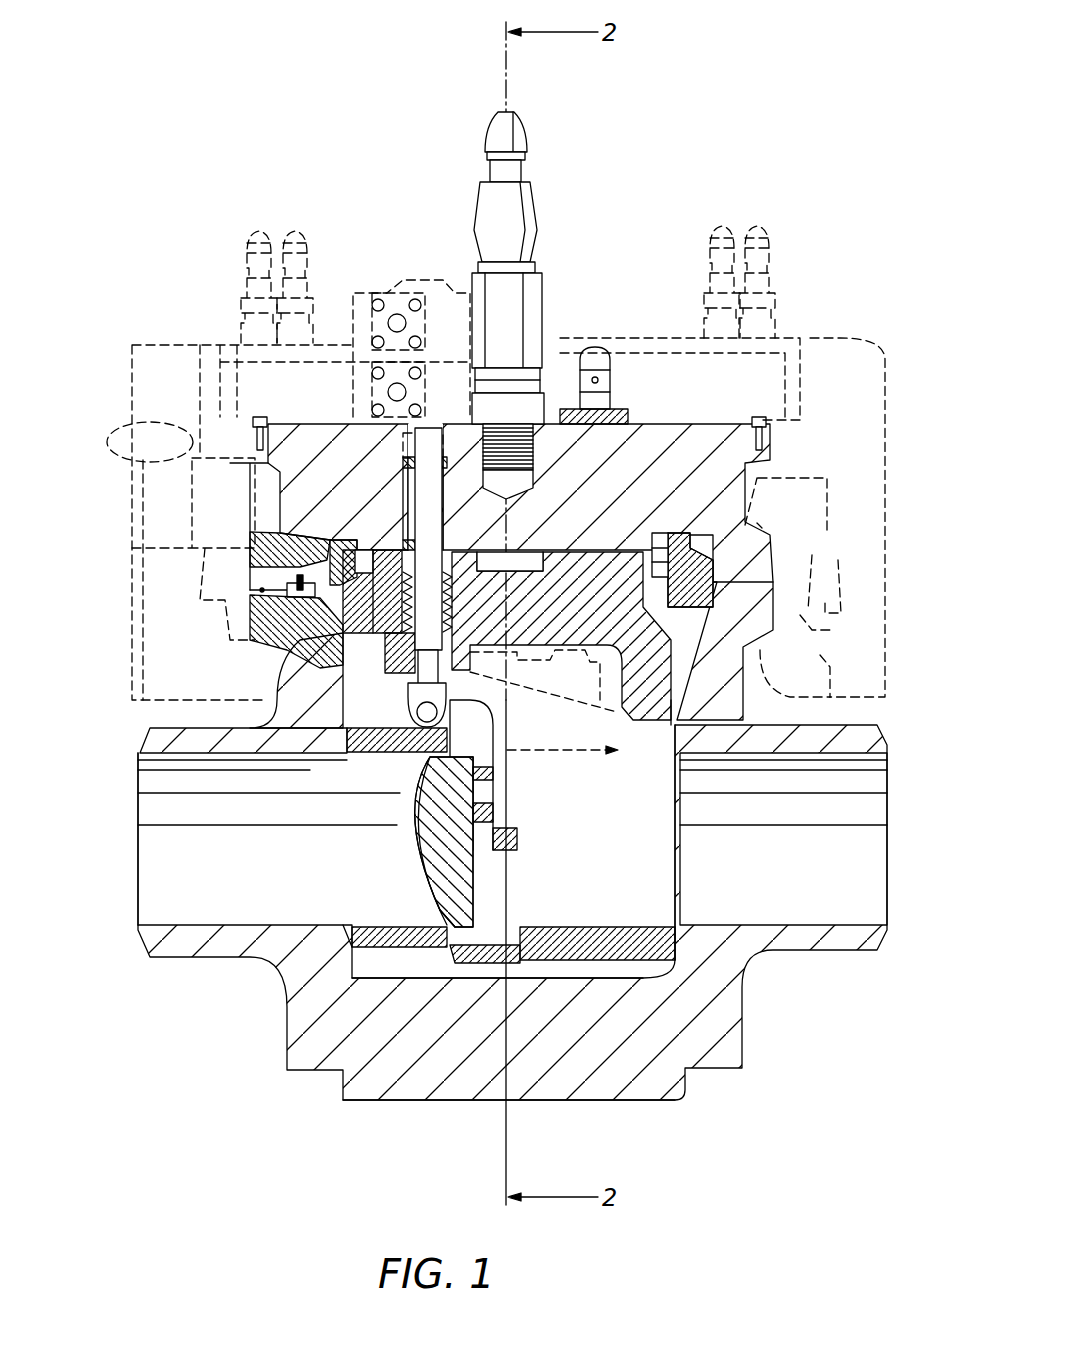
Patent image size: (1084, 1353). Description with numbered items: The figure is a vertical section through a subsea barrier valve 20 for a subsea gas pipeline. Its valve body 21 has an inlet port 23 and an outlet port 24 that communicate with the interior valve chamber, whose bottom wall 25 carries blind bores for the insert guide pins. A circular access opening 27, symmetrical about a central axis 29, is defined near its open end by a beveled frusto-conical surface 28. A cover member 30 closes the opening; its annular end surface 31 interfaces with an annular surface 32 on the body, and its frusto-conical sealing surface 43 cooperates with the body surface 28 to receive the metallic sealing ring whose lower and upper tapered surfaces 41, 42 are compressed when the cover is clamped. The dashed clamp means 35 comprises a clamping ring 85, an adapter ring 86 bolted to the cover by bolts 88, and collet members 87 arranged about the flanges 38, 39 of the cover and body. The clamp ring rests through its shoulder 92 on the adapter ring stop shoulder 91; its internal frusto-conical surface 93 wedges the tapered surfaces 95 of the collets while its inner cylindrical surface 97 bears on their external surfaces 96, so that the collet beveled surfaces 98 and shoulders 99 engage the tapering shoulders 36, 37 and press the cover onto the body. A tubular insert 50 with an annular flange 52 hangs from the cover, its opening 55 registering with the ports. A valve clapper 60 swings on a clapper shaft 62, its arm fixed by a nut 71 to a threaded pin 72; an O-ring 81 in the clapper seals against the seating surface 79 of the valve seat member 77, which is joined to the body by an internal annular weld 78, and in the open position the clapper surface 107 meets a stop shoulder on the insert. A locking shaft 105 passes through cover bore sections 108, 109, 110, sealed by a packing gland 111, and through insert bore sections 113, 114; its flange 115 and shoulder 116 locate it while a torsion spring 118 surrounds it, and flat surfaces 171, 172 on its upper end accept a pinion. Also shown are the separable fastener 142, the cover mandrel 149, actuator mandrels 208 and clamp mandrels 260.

The subsea barrier valve 20 is at (752, 1037).
The valve body 21 is at (440, 962).
The inlet port 23 is at (160, 880).
The outlet port 24 is at (815, 808).
The bottom wall 25 is at (643, 968).
The access opening 27 is at (355, 707).
The beveled frusto-conical surface 28 is at (683, 617).
The central axis 29 is at (503, 1118).
The cover member 30 is at (650, 474).
The annular end surface 31 is at (250, 590).
The annular surface 32 is at (745, 560).
The clamp means 35 is at (126, 390).
The tapering shoulder 36 is at (750, 520).
The tapering shoulder 37 is at (760, 637).
The annular flange 38 is at (762, 525).
The annular flange 39 is at (755, 605).
The external frusto-conical sealing surface 41 is at (282, 645).
The upper external frusto-conical sealing surface 42 is at (330, 557).
The frusto-conical sealing surface 43 is at (345, 540).
The tubular insert 50 is at (588, 604).
The annular flange 52 is at (690, 553).
The opening 55 is at (650, 927).
The valve clapper 60 is at (416, 853).
The clapper shaft 62 is at (370, 757).
The nut 71 is at (503, 820).
The threaded pin 72 is at (517, 836).
The valve seat member 77 is at (413, 933).
The internal annular weld 78 is at (350, 922).
The annular seating surface 79 is at (467, 933).
The O-ring 81 is at (420, 757).
The clamping ring 85 is at (890, 347).
The adapter ring 86 is at (835, 333).
The collet member 87 is at (797, 681).
The bolt 88 is at (758, 417).
The stop shoulder 91 is at (195, 433).
The annular shoulder 92 is at (190, 462).
The internal annular frusto-conical surface 93 is at (830, 637).
The external tapered surface 95 is at (830, 677).
The external surface 96 is at (830, 477).
The inner cylindrical surface 97 is at (830, 520).
The downward facing beveled surface 98 is at (250, 545).
The upward facing shoulder 99 is at (268, 627).
The locking shaft 105 is at (385, 653).
The surface 107 is at (478, 945).
The bore section 108 is at (650, 738).
The intermediate bore section 109 is at (403, 460).
The small diameter bore section 110 is at (444, 510).
The packing gland 111 is at (405, 485).
The enlarged diameter bore section 113 is at (345, 503).
The reduced diameter bore section 114 is at (452, 640).
The annular flange 115 is at (455, 553).
The annular shoulder 116 is at (407, 663).
The torsion spring 118 is at (343, 603).
The separable fastener 142 is at (616, 380).
The cover mandrel 149 is at (537, 200).
The flat surface 171 is at (405, 424).
The flat surface 172 is at (443, 470).
The actuator mandrel 208 is at (715, 242).
The clamp mandrel 260 is at (772, 242).